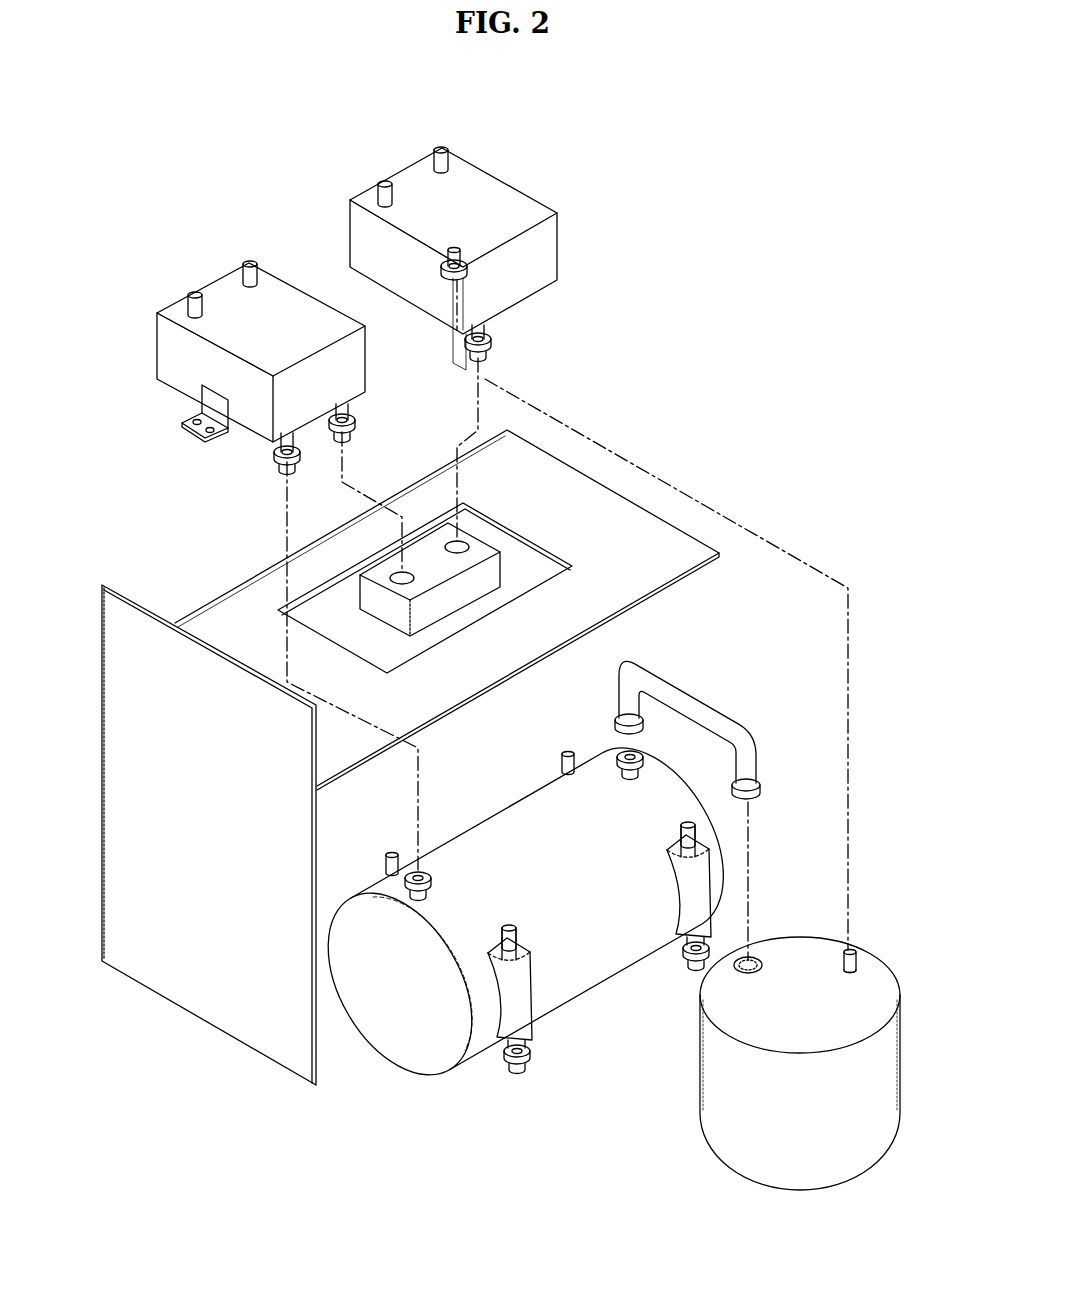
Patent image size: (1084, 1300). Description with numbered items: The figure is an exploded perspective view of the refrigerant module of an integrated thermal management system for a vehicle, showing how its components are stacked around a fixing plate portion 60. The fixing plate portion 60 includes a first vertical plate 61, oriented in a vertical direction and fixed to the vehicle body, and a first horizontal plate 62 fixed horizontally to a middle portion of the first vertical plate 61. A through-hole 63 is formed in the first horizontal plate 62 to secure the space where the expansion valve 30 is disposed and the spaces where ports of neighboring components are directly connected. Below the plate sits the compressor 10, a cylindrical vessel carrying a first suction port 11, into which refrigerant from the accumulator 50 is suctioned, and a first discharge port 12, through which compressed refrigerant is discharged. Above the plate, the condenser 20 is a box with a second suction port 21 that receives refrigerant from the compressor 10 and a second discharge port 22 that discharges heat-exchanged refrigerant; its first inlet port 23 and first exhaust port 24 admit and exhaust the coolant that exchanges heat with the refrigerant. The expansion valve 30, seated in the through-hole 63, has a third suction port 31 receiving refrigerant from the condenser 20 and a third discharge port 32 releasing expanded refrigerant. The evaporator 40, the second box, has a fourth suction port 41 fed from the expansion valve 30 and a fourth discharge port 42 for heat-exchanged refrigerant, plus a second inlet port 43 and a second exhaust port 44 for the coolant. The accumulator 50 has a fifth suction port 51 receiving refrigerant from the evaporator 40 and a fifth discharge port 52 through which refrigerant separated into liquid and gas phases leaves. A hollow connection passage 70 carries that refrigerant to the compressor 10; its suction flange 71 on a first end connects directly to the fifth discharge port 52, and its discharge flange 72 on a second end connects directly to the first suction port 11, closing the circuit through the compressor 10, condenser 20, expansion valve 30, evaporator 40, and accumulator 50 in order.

The compressor 10 is at (428, 1060).
The first suction port 11 is at (628, 750).
The first discharge port 12 is at (413, 874).
The condenser 20 is at (168, 346).
The second suction port 21 is at (282, 460).
The second discharge port 22 is at (358, 418).
The first inlet port 23 is at (188, 294).
The first exhaust port 24 is at (246, 262).
The expansion valve 30 is at (478, 547).
The third suction port 31 is at (405, 582).
The third discharge port 32 is at (463, 551).
The evaporator 40 is at (488, 175).
The fourth suction port 41 is at (494, 343).
The fourth discharge port 42 is at (452, 250).
The second inlet port 43 is at (380, 182).
The second exhaust port 44 is at (436, 148).
The accumulator 50 is at (713, 1125).
The fifth suction port 51 is at (856, 952).
The fifth discharge port 52 is at (702, 993).
The fixing plate portion 60 is at (206, 1171).
The first vertical plate 61 is at (212, 1007).
The first horizontal plate 62 is at (617, 530).
The through-hole 63 is at (538, 561).
The connection passage 70 is at (708, 718).
The suction flange 71 is at (760, 790).
The discharge flange 72 is at (642, 722).